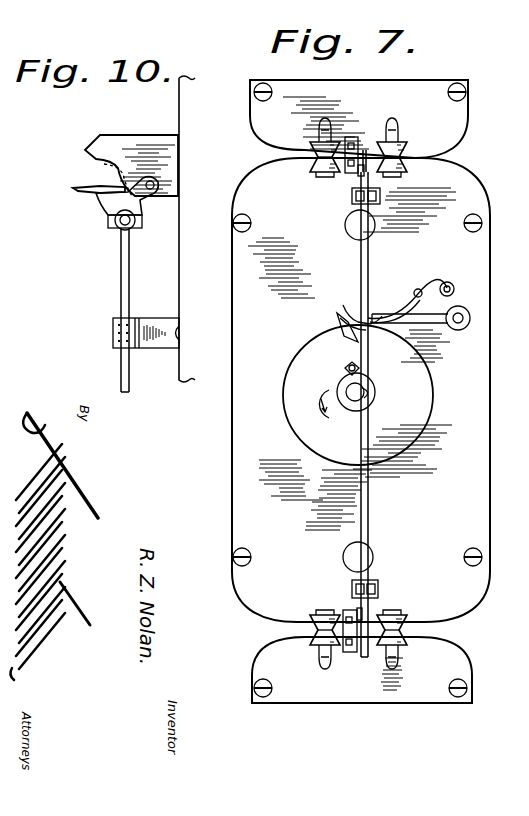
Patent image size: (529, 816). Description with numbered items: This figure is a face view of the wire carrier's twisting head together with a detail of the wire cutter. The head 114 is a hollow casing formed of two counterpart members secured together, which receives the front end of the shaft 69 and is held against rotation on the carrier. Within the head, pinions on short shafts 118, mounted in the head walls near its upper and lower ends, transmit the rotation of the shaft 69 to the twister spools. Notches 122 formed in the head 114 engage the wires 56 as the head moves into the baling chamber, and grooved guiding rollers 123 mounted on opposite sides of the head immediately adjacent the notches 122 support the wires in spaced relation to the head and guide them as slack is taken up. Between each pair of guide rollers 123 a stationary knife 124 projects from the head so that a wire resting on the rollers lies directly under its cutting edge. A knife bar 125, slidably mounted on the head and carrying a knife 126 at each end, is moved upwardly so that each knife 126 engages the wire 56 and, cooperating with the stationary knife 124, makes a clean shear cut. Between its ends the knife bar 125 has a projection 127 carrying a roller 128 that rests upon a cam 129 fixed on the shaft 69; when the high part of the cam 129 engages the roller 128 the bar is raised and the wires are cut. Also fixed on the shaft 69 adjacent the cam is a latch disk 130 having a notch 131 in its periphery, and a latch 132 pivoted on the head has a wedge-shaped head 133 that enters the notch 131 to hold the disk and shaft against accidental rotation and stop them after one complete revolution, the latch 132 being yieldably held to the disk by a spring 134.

In FIG. 10, the wire 56 is at (115, 178).
In FIG. 7, the shaft 69 is at (350, 404).
In FIG. 7, the head 114 is at (334, 390).
In FIG. 7, the short shafts 118 is at (350, 226).
In FIG. 7, the notches 122 is at (427, 632).
In FIG. 7, the grooved guiding rollers 123 is at (331, 142).
In FIG. 7, the stationary knife 124 is at (358, 137).
In FIG. 10, the stationary knife 124 is at (131, 138).
In FIG. 7, the knife bar 125 is at (370, 260).
In FIG. 10, the knife bar 125 is at (121, 297).
In FIG. 7, the knife 126 is at (354, 178).
In FIG. 10, the knife 126 is at (97, 197).
In FIG. 7, the projection 127 is at (346, 367).
In FIG. 7, the roller 128 is at (345, 372).
In FIG. 7, the cam 129 is at (370, 390).
In FIG. 7, the latch disk 130 is at (424, 422).
In FIG. 7, the notch 131 is at (345, 335).
In FIG. 7, the latch 132 is at (437, 323).
In FIG. 7, the wedge-shaped head 133 is at (341, 318).
In FIG. 7, the spring 134 is at (425, 300).